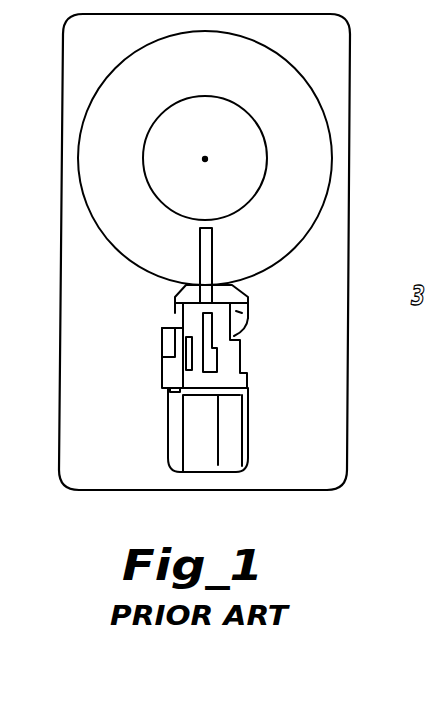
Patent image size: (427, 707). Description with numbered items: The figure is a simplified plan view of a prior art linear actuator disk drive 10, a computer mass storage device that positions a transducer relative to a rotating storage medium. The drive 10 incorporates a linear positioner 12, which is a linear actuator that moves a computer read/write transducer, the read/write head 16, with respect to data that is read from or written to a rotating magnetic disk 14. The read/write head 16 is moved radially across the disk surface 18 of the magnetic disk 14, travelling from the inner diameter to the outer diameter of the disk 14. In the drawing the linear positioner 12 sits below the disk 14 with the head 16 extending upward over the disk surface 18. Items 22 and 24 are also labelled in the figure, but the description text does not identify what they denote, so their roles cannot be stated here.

The prior art linear actuator disk drive 10 is at (102, 522).
The linear positioner 12 is at (202, 452).
The magnetic disk 14 is at (274, 266).
The read/write head 16 is at (206, 227).
The disk surface 18 is at (303, 209).
The central disc 22 is at (253, 122).
The outer ring 24 is at (300, 70).